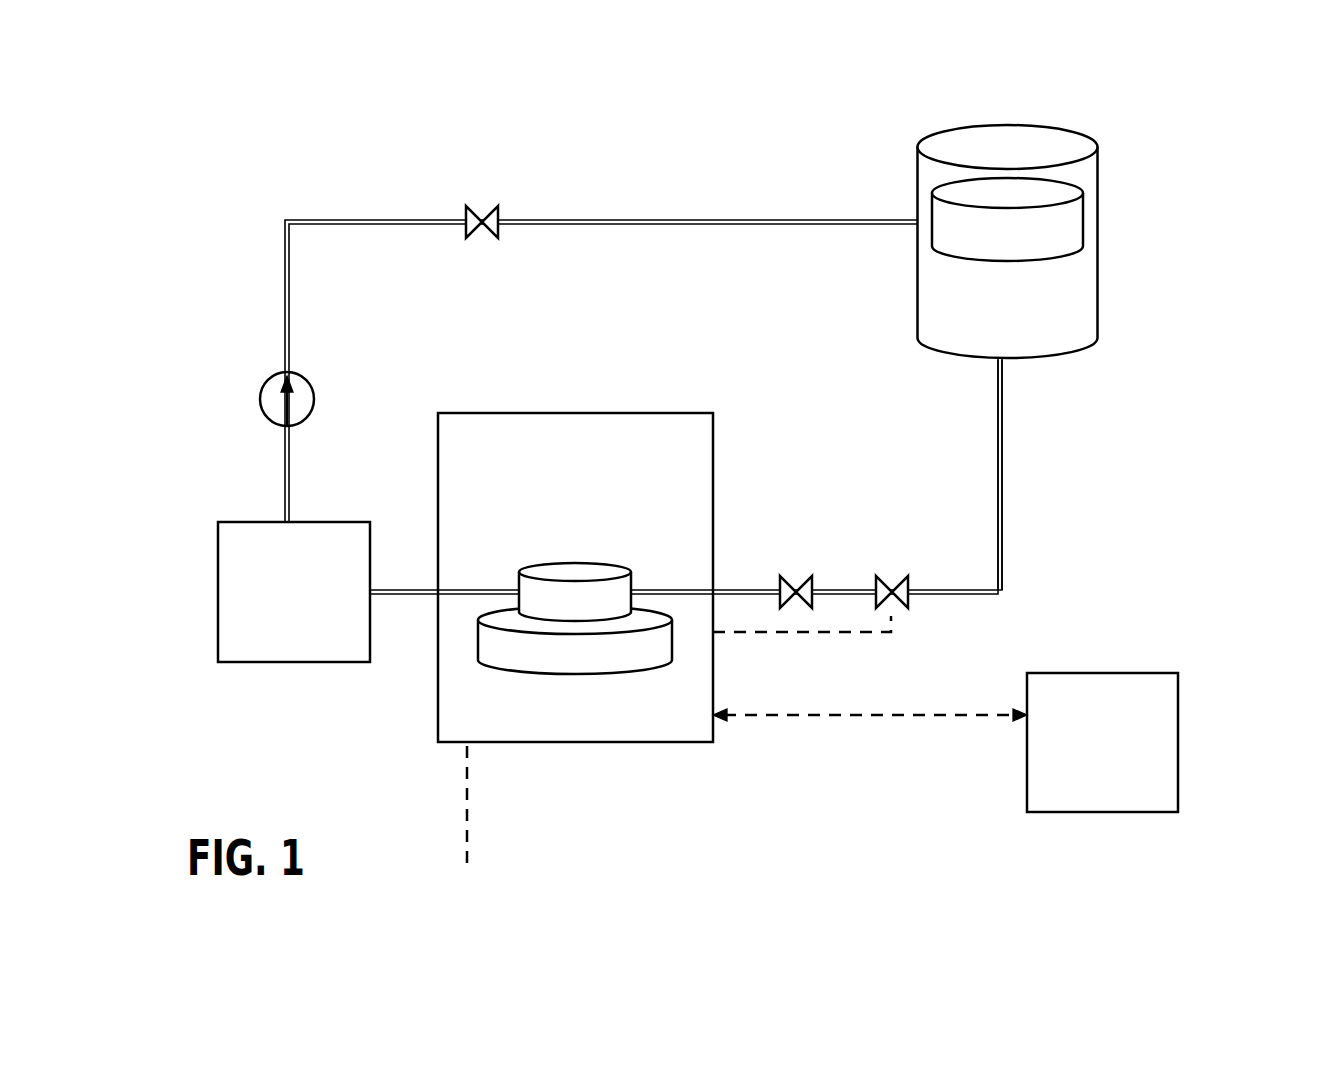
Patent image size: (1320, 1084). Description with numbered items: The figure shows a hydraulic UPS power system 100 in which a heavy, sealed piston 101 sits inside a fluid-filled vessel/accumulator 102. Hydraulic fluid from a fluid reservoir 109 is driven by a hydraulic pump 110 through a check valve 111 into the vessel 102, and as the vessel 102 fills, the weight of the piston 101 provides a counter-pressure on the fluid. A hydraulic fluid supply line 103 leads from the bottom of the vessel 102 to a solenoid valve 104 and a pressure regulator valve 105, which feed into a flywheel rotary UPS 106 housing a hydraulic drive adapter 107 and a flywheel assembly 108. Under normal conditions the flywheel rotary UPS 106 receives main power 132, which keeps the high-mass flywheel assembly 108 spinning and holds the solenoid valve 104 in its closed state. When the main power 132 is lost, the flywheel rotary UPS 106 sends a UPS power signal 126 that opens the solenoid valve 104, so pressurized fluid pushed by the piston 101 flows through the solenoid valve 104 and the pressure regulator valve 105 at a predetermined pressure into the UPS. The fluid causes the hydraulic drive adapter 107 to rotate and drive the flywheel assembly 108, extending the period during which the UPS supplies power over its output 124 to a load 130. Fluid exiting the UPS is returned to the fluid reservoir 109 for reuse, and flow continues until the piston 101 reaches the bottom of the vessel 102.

The UPS power system 100 is at (210, 148).
The piston 101 is at (1095, 228).
The vessel/accumulator 102 is at (1108, 299).
The hydraulic fluid supply line 103 is at (1048, 475).
The solenoid valve 104 is at (904, 552).
The pressure regulator valve 105 is at (796, 552).
The flywheel rotary UPS 106 is at (575, 577).
The hydraulic drive adapter 107 is at (636, 559).
The flywheel assembly 108 is at (563, 682).
The fluid reservoir 109 is at (294, 592).
The hydraulic pump 110 is at (241, 395).
The check valve 111 is at (485, 264).
The output 124 is at (870, 742).
The UPS power signal 126 is at (802, 655).
The load 130 is at (1102, 742).
The main power 132 is at (467, 837).